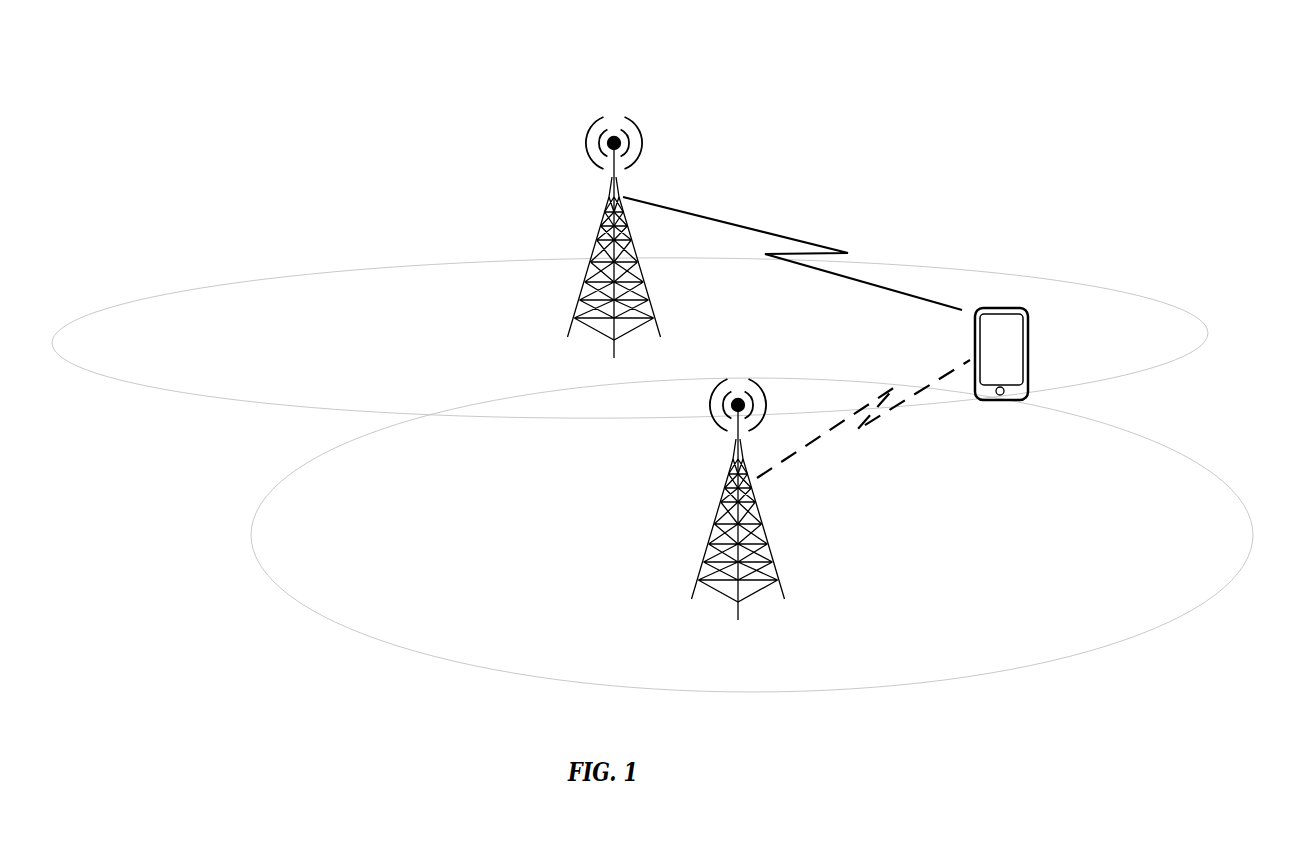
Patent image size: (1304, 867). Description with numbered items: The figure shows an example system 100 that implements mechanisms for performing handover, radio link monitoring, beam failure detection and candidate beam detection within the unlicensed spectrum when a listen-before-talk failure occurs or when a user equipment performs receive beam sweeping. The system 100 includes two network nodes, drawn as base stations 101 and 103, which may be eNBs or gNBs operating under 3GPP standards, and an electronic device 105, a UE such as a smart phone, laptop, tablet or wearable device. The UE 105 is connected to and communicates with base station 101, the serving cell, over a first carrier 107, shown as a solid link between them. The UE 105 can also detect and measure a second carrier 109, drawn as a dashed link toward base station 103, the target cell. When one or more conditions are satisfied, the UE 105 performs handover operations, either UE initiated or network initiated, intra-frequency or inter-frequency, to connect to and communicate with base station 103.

The system 100 is at (1107, 61).
The network node 101 is at (600, 235).
The network node 103 is at (717, 515).
The electronic device 105 is at (1040, 344).
The carrier 107 is at (792, 253).
The carrier 109 is at (863, 423).